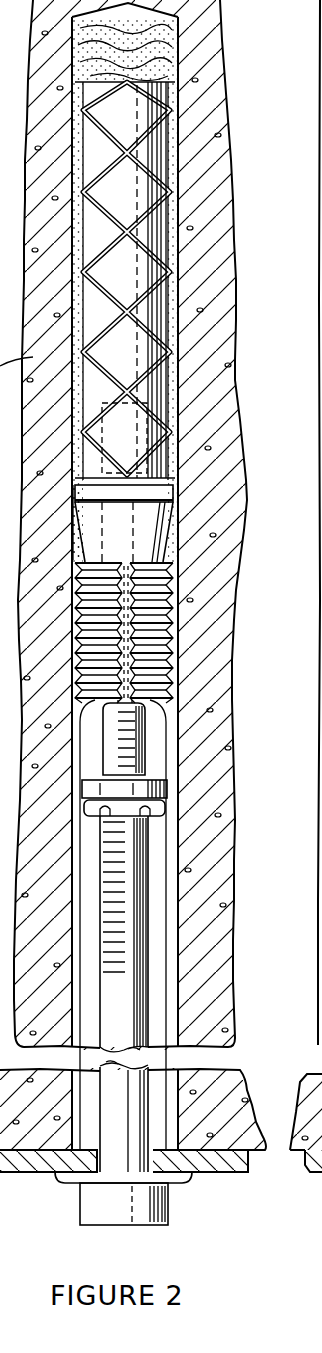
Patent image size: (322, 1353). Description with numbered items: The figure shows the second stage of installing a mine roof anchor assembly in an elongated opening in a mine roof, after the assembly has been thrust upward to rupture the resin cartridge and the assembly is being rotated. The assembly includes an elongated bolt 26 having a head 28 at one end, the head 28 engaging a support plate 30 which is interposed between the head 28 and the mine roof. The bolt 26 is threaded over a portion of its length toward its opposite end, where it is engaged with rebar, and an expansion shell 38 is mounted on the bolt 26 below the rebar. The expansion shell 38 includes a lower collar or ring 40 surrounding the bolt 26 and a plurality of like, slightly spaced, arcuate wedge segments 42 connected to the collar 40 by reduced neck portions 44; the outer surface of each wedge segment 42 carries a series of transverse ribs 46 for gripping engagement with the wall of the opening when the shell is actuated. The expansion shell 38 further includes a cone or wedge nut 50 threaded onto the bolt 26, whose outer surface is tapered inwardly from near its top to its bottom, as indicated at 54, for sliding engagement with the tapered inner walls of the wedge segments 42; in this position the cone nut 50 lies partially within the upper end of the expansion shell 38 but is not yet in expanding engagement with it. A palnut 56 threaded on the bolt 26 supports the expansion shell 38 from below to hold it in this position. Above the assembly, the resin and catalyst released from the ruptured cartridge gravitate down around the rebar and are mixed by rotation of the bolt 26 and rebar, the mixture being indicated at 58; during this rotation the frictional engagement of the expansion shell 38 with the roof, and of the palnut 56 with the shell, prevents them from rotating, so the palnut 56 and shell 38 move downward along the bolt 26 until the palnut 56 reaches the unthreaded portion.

The elongated bolt 26 is at (150, 1028).
The head 28 is at (80, 1208).
The support plate 30 is at (210, 1172).
The expansion shell 38 is at (150, 633).
The lower collar or ring 40 is at (167, 790).
The wedge segments 42 is at (88, 638).
The reduced neck portions 44 is at (93, 742).
The transverse ribs 46 is at (177, 638).
The cone or wedge nut 50 is at (178, 505).
The tapered outer surface of cone nut 54 is at (77, 540).
The palnut 56 is at (165, 810).
The mixed resin and catalyst 58 is at (176, 157).